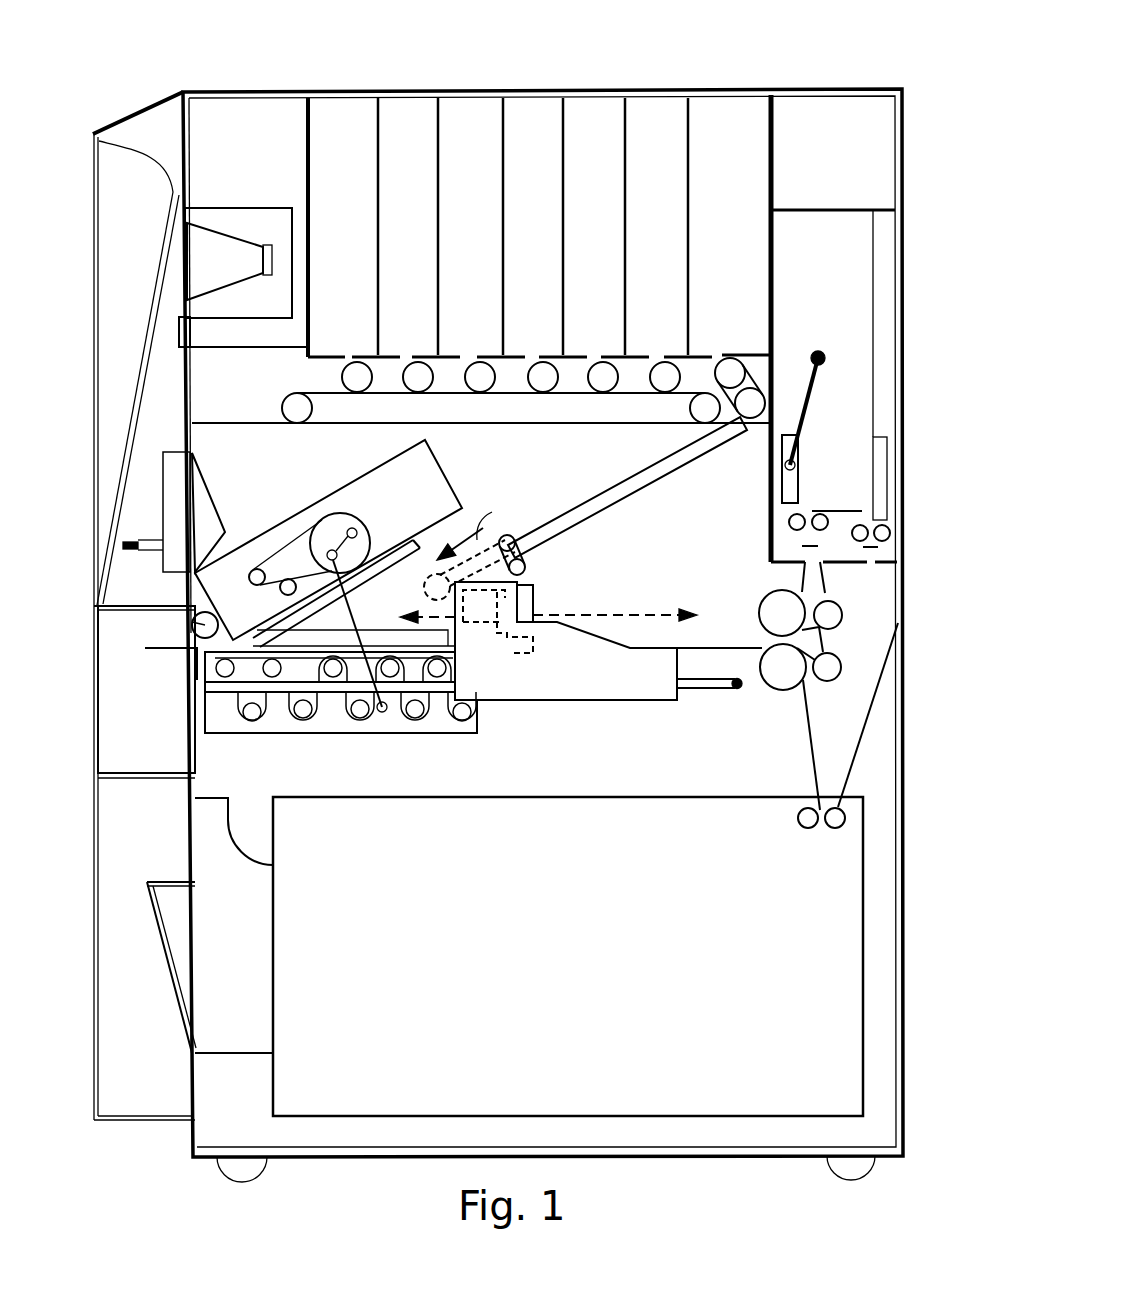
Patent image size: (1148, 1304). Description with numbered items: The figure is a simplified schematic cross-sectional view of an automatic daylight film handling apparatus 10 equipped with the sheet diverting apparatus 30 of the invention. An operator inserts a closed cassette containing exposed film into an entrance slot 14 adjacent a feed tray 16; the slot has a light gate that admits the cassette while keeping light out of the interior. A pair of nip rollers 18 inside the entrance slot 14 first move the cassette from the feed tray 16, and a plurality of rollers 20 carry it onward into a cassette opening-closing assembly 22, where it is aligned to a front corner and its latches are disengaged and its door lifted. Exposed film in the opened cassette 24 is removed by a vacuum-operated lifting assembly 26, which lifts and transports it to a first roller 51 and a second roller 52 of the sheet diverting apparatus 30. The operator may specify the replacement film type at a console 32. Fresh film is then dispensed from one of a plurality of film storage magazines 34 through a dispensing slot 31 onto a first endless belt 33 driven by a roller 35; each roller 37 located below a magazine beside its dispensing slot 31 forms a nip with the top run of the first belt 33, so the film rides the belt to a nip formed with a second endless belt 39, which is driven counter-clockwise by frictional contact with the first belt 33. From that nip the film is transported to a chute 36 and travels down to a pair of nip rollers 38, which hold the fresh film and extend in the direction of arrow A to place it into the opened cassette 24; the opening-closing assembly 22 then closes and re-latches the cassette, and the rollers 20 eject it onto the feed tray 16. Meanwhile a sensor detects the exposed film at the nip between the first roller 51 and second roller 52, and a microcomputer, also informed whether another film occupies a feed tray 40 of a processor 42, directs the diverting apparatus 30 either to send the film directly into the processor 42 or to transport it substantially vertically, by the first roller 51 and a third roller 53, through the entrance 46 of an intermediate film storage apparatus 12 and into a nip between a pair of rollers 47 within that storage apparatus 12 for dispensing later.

The automatic daylight film handling apparatus 10 is at (207, 75).
The intermediate film storage apparatus 12 is at (903, 270).
The entrance slot 14 is at (178, 640).
The feed tray 16 is at (180, 658).
The nip rollers 18 is at (197, 625).
The rollers 20 is at (226, 713).
The cassette opening-closing assembly 22 is at (302, 507).
The opened cassette 24 is at (425, 543).
The vacuum-operated lifting assembly 26 is at (533, 590).
The sheet diverting apparatus 30 is at (855, 638).
The dispensing slot 31 is at (340, 357).
The console 32 is at (179, 330).
The first endless belt 33 is at (300, 393).
The film storage magazines 34 is at (722, 128).
The roller 35 is at (702, 410).
The chute 36 is at (590, 497).
The roller 37 is at (543, 375).
The nip rollers 38 is at (520, 530).
The second endless belt 39 is at (772, 382).
The feed tray 40 is at (853, 755).
The processor 42 is at (568, 985).
The entrance 46 is at (826, 578).
The pair of rollers 47 is at (790, 522).
The first roller 51 is at (775, 600).
The second roller 52 is at (783, 690).
The third roller 53 is at (842, 617).